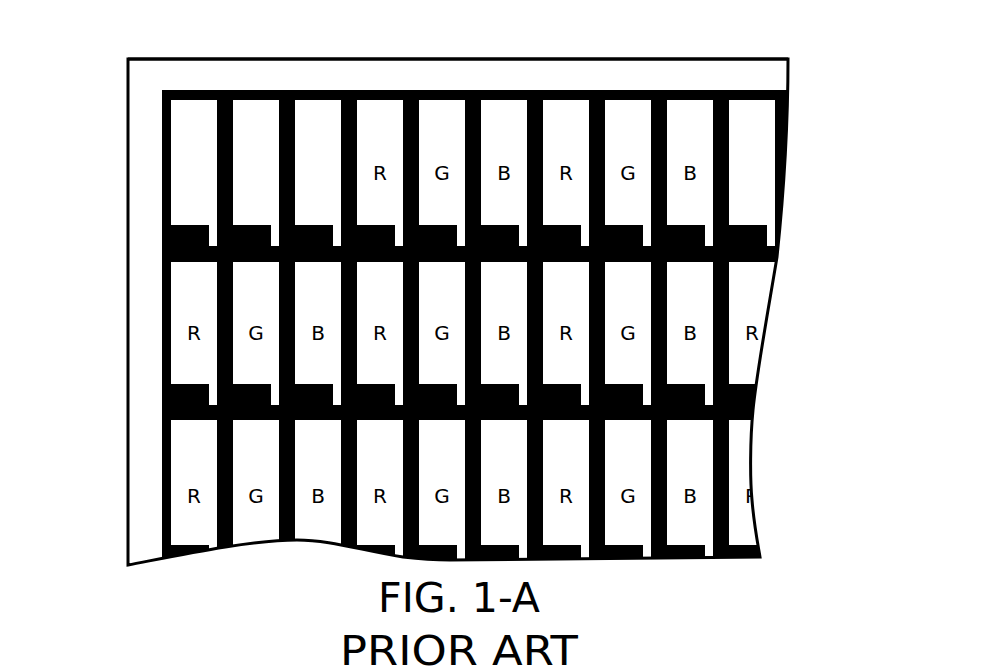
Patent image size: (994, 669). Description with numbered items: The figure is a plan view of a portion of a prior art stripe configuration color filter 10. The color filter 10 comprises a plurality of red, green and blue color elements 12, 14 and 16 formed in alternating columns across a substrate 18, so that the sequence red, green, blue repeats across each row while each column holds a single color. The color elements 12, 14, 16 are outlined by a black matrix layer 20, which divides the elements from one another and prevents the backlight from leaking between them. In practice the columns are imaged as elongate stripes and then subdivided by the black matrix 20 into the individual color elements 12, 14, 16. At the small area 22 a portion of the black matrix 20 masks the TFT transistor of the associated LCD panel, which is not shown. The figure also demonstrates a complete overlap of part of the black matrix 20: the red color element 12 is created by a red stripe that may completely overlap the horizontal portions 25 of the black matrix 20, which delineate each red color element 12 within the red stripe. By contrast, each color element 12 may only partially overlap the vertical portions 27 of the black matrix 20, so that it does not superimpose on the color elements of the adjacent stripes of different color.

The color filter 10 is at (116, 447).
The red color element 12 is at (191, 108).
The green color element 14 is at (257, 108).
The blue color element 16 is at (316, 108).
The substrate 18 is at (662, 78).
The black matrix layer 20 is at (782, 90).
The area 22 is at (771, 228).
The horizontal portions 25 is at (188, 246).
The vertical portions 27 is at (218, 170).